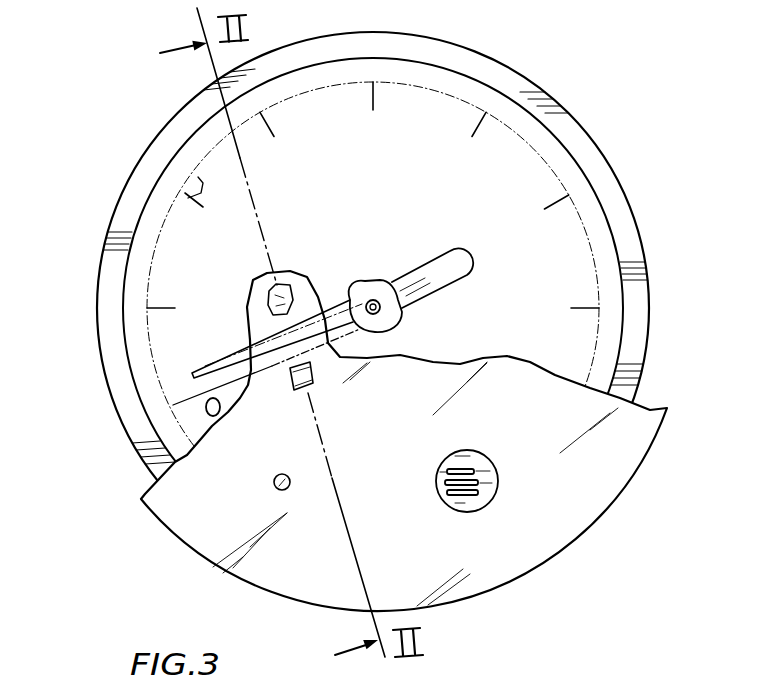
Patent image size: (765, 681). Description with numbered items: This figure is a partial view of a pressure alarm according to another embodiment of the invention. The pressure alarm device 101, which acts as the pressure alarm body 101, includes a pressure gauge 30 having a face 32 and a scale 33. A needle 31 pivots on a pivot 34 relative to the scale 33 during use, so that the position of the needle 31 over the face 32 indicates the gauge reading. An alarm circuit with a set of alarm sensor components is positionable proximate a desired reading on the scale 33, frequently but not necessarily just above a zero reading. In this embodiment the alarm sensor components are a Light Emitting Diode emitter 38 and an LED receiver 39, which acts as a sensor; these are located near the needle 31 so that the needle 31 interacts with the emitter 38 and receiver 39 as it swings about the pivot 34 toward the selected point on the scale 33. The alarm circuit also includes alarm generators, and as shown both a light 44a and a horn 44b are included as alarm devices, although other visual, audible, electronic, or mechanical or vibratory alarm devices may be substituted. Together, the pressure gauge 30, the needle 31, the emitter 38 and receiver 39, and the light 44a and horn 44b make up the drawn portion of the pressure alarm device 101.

The pressure gauge 30 is at (98, 300).
The needle 31 is at (436, 256).
The face 32 is at (173, 357).
The scale 33 is at (198, 177).
The pivot 34 is at (368, 304).
The Light Emitting Diode (LED) emitter 38 is at (268, 296).
The LED receiver 39 is at (312, 376).
The light 44a is at (275, 488).
The horn 44b is at (497, 510).
The pressure alarm device 101 is at (614, 159).